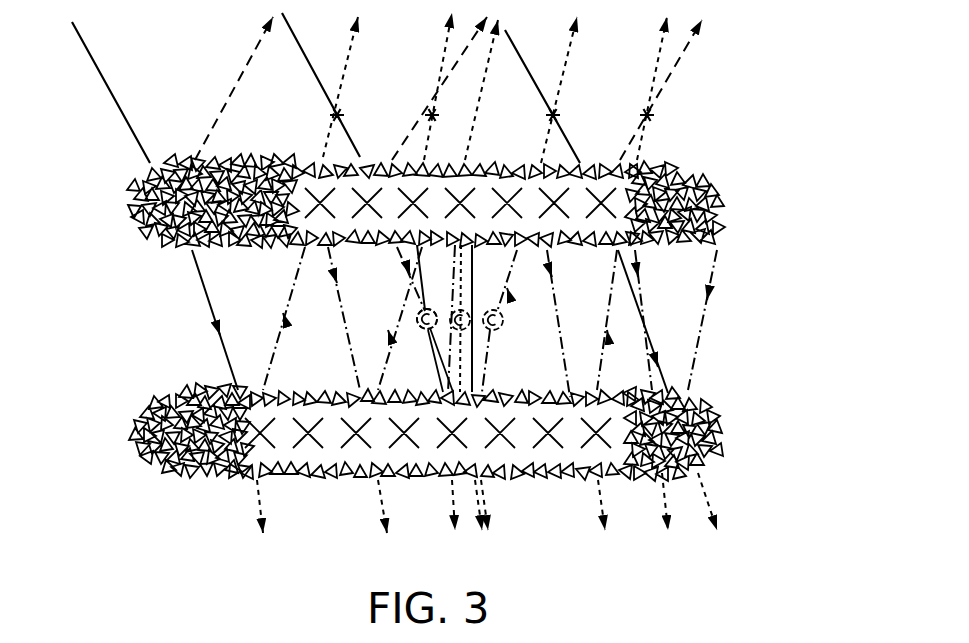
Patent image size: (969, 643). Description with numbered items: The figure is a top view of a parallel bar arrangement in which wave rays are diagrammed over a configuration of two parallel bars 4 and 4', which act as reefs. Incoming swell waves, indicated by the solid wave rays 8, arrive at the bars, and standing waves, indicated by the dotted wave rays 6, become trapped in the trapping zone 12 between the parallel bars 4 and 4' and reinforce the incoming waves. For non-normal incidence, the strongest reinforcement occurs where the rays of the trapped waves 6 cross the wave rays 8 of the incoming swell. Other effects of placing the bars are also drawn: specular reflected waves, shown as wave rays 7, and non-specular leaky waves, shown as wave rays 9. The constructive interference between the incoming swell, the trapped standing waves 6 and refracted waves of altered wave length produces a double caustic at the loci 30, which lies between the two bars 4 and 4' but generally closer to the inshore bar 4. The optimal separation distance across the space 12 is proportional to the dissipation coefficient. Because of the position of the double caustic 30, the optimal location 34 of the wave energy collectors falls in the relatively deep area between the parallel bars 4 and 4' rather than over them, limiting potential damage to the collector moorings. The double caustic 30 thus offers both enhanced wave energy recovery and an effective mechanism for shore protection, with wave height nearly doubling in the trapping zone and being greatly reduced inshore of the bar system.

The inshore parallel bar 4 is at (426, 451).
The parallel bar 4' is at (426, 182).
The wave rays of trapped standing waves 6 is at (290, 295).
The wave rays of specular reflected waves 7 is at (249, 60).
The wave rays of incoming waves 8 is at (107, 78).
The wave rays of non-specular leaky waves 9 is at (443, 60).
The trapping zone 12 is at (325, 346).
The loci of double caustic 30 is at (422, 330).
The optimal location of wave energy collectors 34 is at (433, 311).